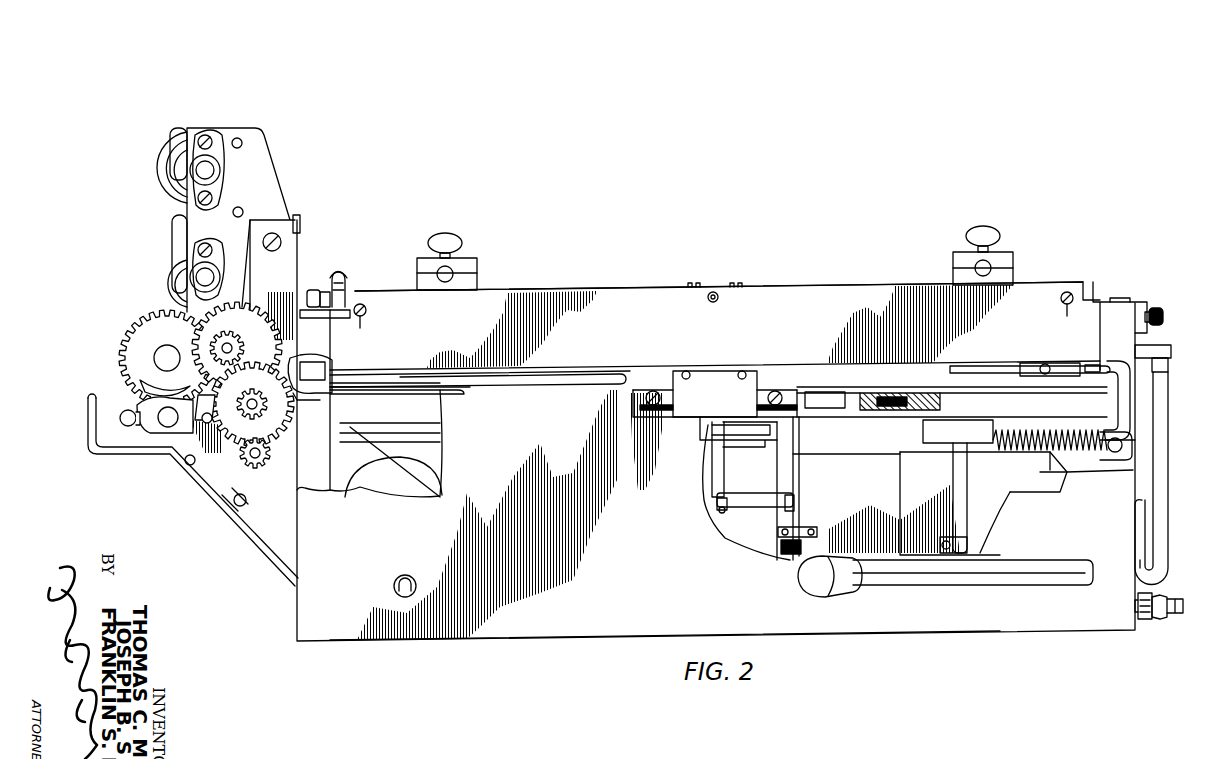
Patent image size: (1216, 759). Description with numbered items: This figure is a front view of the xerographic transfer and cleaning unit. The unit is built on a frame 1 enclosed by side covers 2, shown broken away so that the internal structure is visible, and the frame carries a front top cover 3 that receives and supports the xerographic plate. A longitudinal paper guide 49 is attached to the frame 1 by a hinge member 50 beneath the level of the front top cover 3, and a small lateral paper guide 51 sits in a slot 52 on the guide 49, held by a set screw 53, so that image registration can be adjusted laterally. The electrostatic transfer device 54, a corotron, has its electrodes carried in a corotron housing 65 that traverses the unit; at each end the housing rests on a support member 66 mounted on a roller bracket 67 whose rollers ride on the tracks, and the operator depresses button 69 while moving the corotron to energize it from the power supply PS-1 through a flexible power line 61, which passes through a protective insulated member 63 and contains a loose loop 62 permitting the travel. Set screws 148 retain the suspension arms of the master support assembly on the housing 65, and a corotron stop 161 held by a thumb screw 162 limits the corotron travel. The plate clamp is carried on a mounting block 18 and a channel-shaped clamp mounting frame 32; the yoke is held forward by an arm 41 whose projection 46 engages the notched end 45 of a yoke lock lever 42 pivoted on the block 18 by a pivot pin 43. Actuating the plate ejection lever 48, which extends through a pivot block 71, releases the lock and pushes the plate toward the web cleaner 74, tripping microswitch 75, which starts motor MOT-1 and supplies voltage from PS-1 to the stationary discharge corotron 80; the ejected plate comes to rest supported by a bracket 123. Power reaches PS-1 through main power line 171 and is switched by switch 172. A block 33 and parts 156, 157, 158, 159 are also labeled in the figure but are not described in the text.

The frame 1 is at (298, 470).
The side covers 2 is at (738, 550).
The front top cover 3 is at (418, 396).
The mounting block 18 is at (781, 460).
The clamp mounting frame 32 is at (742, 452).
The clamp block 33 is at (478, 270).
The arm 41 is at (725, 465).
The yoke lock lever 42 is at (745, 492).
The pivot pin 43 is at (790, 500).
The notched end 45 is at (710, 510).
The projection 46 is at (730, 505).
The plate ejection lever 48 is at (880, 585).
The longitudinal paper guide 49 is at (484, 385).
The hinge member 50 is at (695, 419).
The lateral paper guide 51 is at (1035, 367).
The slot 52 is at (978, 366).
The set screw 53 is at (1048, 365).
The electrostatic transfer device 54 is at (586, 283).
The flexible power line 61 is at (1167, 436).
The loose loop 62 is at (1167, 572).
The protective insulated member 63 is at (1172, 350).
The corotron housing 65 is at (822, 287).
The support member 66 is at (358, 320).
The roller brackets 67 is at (326, 318).
The button 69 is at (720, 298).
The pivot block 71 is at (925, 432).
The web cleaner 74 is at (266, 126).
The microswitch 75 is at (308, 396).
The stationary electrostatic discharge device 80 is at (320, 350).
The bracket 123 is at (150, 462).
The set screws 148 is at (450, 236).
The cap 156 is at (347, 298).
The switch body 157 is at (310, 300).
The switch button 158 is at (328, 290).
The switch plunger 159 is at (340, 283).
The corotron stop 161 is at (1147, 300).
The thumb screw 162 is at (1168, 318).
The main power line 171 is at (1168, 598).
The switch 172 is at (1168, 614).
The motor MOT-1 is at (376, 502).
The power supply PS-1 is at (893, 455).